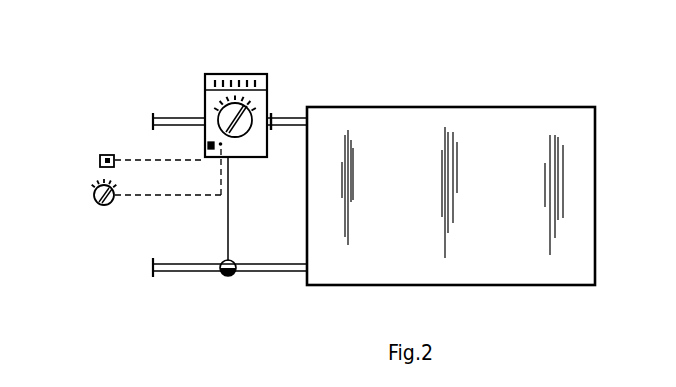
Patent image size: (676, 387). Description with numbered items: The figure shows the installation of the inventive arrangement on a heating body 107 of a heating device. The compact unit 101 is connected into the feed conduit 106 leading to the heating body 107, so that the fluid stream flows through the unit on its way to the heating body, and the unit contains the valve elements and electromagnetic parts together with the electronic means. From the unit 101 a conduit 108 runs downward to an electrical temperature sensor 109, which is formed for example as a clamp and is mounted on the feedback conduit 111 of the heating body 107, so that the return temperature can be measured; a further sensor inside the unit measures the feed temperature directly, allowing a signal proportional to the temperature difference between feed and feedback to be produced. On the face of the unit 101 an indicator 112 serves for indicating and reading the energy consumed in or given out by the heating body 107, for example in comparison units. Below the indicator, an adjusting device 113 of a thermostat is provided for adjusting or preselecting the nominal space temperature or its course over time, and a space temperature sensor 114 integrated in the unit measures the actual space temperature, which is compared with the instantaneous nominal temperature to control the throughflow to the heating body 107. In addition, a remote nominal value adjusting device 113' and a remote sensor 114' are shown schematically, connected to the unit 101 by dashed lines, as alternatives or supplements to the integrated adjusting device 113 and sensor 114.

The compact unit 101 is at (229, 62).
The feed conduit 106 is at (171, 121).
The heating body 107 is at (490, 125).
The conduit 108 is at (230, 236).
The electrical temperature sensor 109 is at (233, 275).
The feedback conduit 111 is at (200, 265).
The indicator 112 is at (255, 78).
The adjusting device 113 is at (285, 84).
The remote nominal value adjusting device 113' is at (119, 205).
The space temperature sensor 114 is at (115, 140).
The remote sensor 114' is at (111, 171).